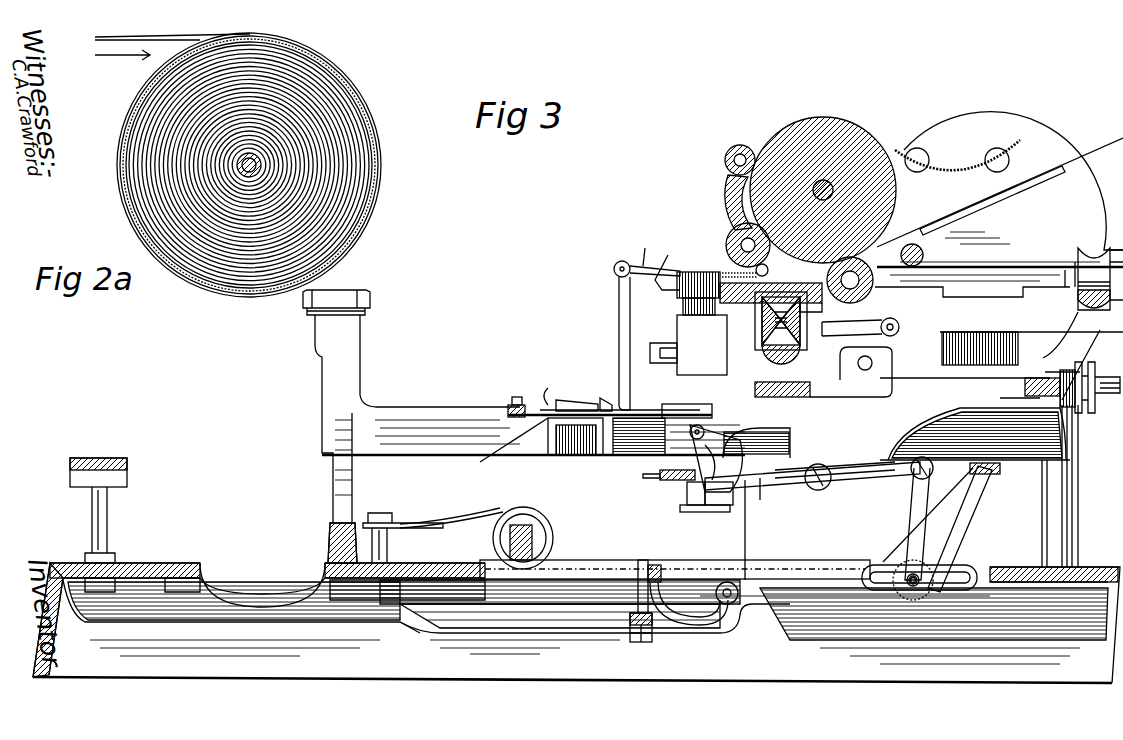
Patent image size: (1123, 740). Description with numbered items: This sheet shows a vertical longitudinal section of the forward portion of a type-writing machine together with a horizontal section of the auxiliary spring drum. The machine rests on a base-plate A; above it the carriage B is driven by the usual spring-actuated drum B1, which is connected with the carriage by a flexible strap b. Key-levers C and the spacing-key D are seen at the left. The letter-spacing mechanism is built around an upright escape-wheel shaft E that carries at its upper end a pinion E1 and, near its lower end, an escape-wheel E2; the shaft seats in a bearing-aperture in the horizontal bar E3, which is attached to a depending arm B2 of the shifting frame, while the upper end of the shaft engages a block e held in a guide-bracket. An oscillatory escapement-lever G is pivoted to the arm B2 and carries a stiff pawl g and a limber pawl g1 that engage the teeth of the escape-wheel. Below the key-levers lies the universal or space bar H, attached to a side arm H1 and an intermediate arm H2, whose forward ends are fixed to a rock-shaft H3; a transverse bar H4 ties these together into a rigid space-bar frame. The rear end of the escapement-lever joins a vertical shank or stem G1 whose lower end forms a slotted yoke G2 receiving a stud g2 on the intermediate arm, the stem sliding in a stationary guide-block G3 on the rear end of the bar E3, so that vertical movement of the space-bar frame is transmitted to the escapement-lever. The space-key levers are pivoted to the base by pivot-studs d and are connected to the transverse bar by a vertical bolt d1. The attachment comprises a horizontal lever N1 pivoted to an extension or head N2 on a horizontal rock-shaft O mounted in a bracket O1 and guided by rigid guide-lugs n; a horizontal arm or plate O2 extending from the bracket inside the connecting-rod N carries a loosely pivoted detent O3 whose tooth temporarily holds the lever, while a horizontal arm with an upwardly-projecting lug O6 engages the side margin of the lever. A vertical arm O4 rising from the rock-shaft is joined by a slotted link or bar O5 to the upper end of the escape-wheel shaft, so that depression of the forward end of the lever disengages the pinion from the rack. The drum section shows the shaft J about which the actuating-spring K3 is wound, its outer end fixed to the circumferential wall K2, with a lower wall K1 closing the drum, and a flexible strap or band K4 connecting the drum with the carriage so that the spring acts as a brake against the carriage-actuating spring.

In FIG. 2A, the actuating-spring K3 is at (343, 128).
In FIG. 2A, the circumferential wall K2 is at (362, 172).
In FIG. 2A, the lower wall K1 is at (372, 215).
In FIG. 2A, the flexible strap or band K4 is at (165, 42).
In FIG. 3, the flexible strap or band K4 is at (690, 307).
In FIG. 2A, the shaft J is at (250, 170).
In FIG. 3, the base-plate A is at (576, 623).
In FIG. 3, the spacing-key D is at (93, 458).
In FIG. 3, the key-levers C is at (546, 426).
In FIG. 3, the connecting-rod N is at (517, 397).
In FIG. 3, the horizontal lever N1 is at (600, 409).
In FIG. 3, the extension or head N2 is at (625, 402).
In FIG. 3, the rigid guide-lugs n is at (652, 404).
In FIG. 3, the horizontal rock-shaft O is at (600, 397).
In FIG. 3, the bracket O1 is at (575, 436).
In FIG. 3, the horizontal arm or plate O2 is at (556, 400).
In FIG. 3, the detent O3 is at (648, 340).
In FIG. 3, the vertical arm O4 is at (588, 476).
In FIG. 3, the link or bar O5 is at (642, 245).
In FIG. 3, the horizontal arm with upwardly-projecting lug O6 is at (568, 470).
In FIG. 3, the escape-wheel shaft E is at (687, 498).
In FIG. 3, the pinion E1 is at (667, 264).
In FIG. 3, the escape-wheel E2 is at (660, 472).
In FIG. 3, the horizontal bar E3 is at (775, 515).
In FIG. 3, the block e is at (806, 330).
In FIG. 3, the stiff pawl g is at (748, 448).
In FIG. 3, the limber pawl g1 is at (718, 495).
In FIG. 3, the stud g2 is at (912, 588).
In FIG. 3, the escapement-lever G is at (848, 475).
In FIG. 3, the vertical shank or stem G1 is at (928, 505).
In FIG. 3, the slotted yoke G2 is at (950, 592).
In FIG. 3, the stationary guide-block G3 is at (948, 540).
In FIG. 3, the universal or space bar H is at (985, 475).
In FIG. 3, the side arm H1 is at (405, 615).
In FIG. 3, the intermediate arm H2 is at (610, 548).
In FIG. 3, the rock-shaft H3 is at (518, 525).
In FIG. 3, the transverse bar H4 is at (660, 552).
In FIG. 3, the carriage B is at (924, 211).
In FIG. 3, the spring-actuated drum B1 is at (1032, 332).
In FIG. 3, the depending arm B2 is at (840, 500).
In FIG. 3, the flexible strap b is at (942, 350).
In FIG. 3, the pivot-studs d is at (729, 604).
In FIG. 3, the vertical bolt d1 is at (630, 608).